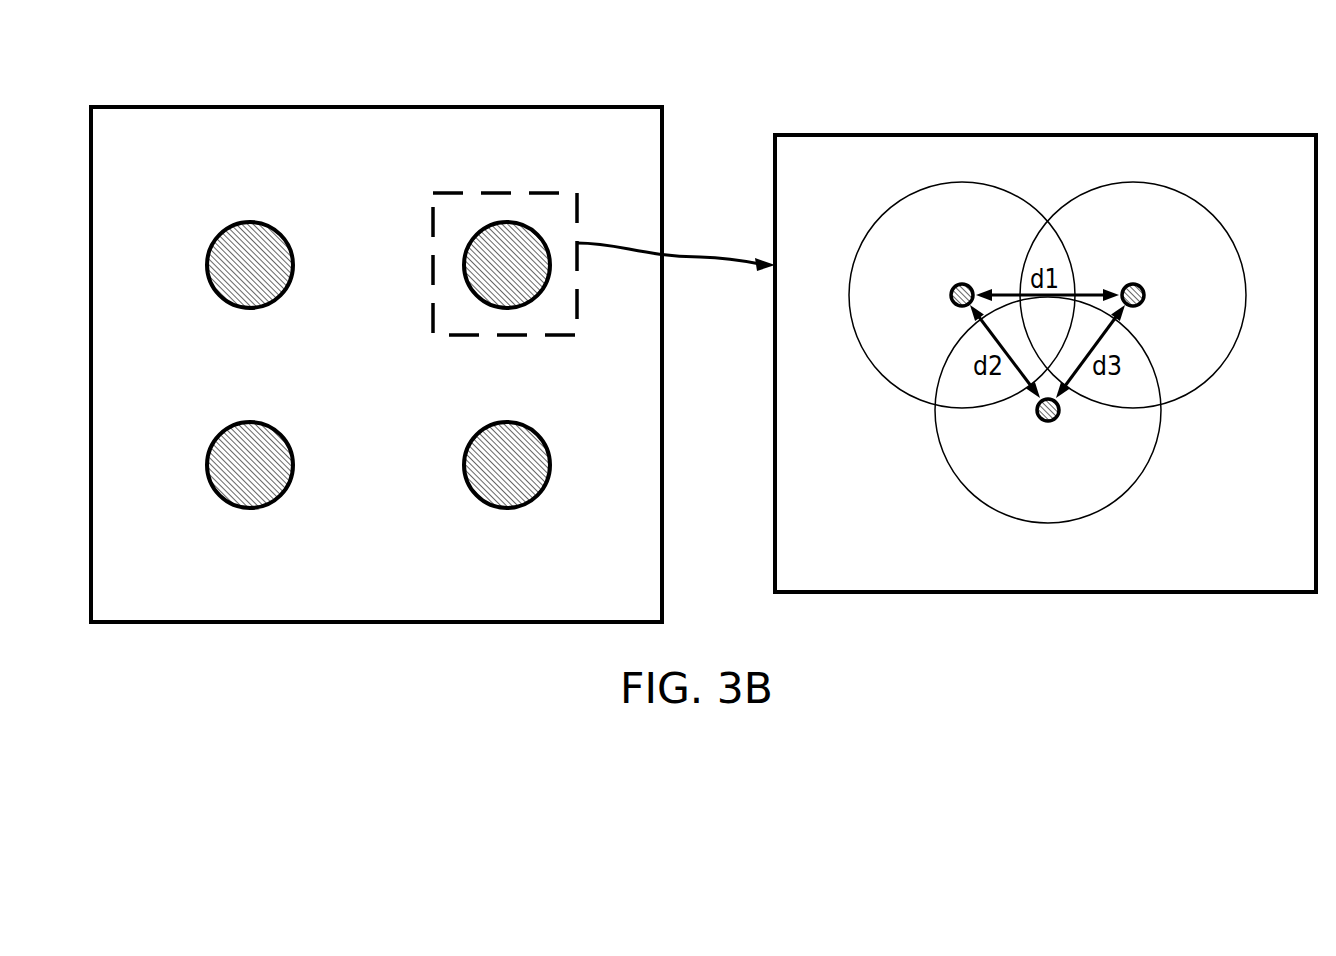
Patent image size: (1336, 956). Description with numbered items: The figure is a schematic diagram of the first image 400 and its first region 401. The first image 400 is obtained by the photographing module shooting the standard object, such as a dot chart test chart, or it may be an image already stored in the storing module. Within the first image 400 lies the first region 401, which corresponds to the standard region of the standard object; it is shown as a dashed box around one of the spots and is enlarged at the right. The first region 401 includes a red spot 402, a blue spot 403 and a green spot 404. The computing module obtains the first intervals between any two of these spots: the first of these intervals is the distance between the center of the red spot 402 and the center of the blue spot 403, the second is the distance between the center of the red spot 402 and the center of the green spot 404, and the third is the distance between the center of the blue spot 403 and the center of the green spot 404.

The first image 400 is at (122, 105).
The first region 401 is at (510, 222).
The red spot 402 is at (860, 255).
The blue spot 403 is at (1203, 390).
The green spot 404 is at (1147, 468).